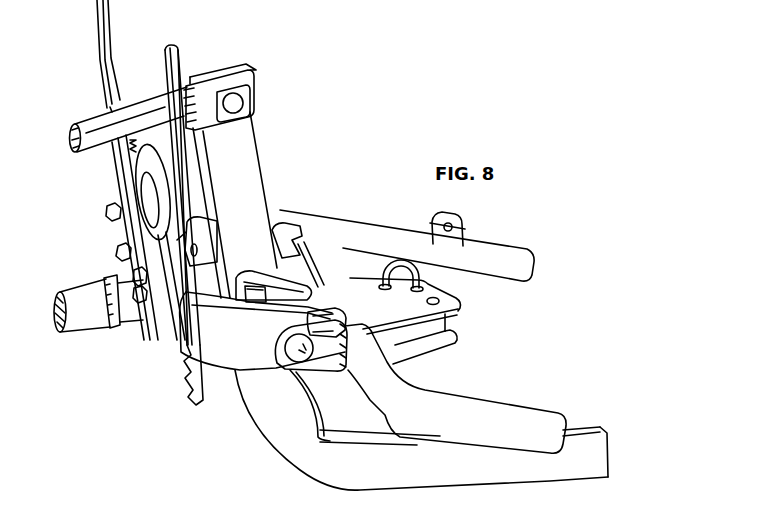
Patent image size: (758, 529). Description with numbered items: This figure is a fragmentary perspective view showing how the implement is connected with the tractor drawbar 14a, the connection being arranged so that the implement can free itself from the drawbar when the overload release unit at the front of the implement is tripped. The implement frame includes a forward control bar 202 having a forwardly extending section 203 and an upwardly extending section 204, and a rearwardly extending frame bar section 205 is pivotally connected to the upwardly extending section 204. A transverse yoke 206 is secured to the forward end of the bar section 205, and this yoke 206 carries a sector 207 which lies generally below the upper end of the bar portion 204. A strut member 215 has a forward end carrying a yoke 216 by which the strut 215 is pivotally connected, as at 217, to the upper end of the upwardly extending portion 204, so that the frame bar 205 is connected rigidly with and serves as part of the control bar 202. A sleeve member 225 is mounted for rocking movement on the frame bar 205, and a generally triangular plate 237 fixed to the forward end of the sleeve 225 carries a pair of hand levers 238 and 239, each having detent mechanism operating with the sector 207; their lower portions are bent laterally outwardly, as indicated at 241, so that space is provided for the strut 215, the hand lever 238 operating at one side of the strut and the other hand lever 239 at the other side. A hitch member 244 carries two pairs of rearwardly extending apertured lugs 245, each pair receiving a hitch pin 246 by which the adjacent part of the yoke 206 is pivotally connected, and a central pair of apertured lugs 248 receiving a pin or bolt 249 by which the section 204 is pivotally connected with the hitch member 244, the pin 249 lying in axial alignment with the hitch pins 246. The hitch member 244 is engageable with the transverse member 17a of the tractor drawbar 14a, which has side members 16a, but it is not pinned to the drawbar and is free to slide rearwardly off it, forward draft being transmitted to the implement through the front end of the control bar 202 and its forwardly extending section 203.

The hand lever 238 is at (107, 63).
The hand lever 239 is at (176, 68).
The laterally bent lower portion 241 is at (110, 107).
The strut member 215 is at (88, 136).
The yoke 216 is at (210, 117).
The pivotal connection 217 is at (240, 103).
The upwardly extending section 204 is at (248, 160).
The sector 207 is at (143, 170).
The rearwardly extending apertured lugs 245 is at (285, 228).
The hitch member 244 is at (345, 245).
The central apertured lugs 248 is at (277, 270).
The pin or bolt 249 is at (263, 302).
The rearwardly extending frame bar section 205 is at (80, 283).
The sleeve member 225 is at (125, 320).
The generally triangular plate 237 is at (153, 348).
The hitch pin 246 is at (301, 357).
The yoke 206 is at (225, 360).
The transverse member 17a is at (378, 366).
The side member 16a is at (531, 420).
The tractor drawbar 14a is at (441, 434).
The forward control bar 202 is at (612, 452).
The forwardly extending section 203 is at (560, 474).